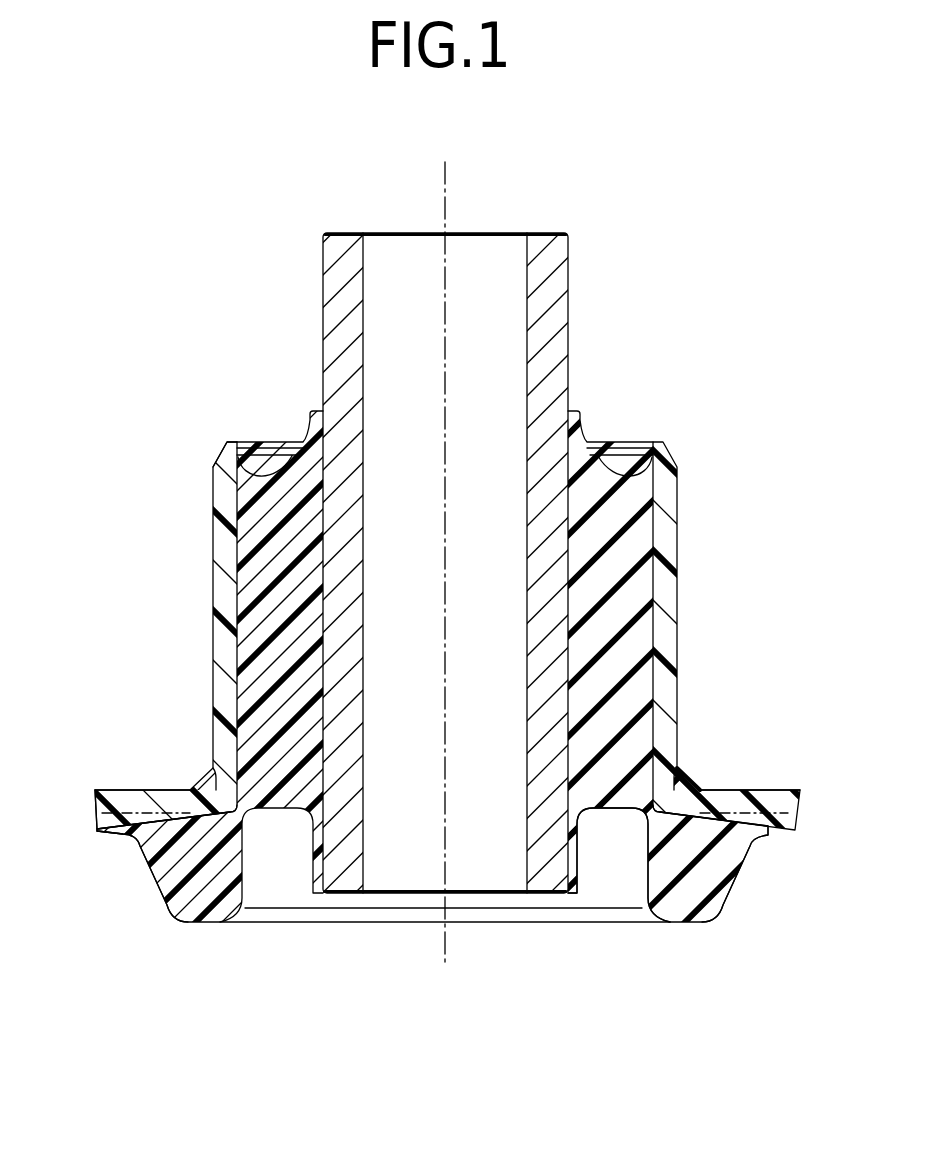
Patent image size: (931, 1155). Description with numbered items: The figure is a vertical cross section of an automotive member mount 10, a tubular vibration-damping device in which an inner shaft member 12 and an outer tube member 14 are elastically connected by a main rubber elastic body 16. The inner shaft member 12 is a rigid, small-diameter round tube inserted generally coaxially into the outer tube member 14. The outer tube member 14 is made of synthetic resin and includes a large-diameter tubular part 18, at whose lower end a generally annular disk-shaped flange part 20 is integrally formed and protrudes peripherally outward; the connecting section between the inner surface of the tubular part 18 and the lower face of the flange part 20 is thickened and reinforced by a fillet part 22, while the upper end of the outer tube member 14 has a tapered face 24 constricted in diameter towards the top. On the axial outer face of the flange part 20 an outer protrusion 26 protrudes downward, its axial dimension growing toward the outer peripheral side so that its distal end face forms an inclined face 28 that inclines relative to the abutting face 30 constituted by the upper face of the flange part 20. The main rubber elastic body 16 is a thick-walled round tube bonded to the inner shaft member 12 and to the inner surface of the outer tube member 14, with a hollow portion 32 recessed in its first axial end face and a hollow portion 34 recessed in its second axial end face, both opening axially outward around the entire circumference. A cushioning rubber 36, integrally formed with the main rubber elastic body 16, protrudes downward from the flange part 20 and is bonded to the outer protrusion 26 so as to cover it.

The member mount 10 is at (681, 349).
The inner shaft member 12 is at (575, 286).
The outer tube member 14 is at (683, 596).
The main rubber elastic body 16 is at (618, 693).
The tubular part 18 is at (222, 599).
The flange part 20 is at (160, 800).
The fillet part 22 is at (203, 782).
The tapered face 24 is at (224, 456).
The outer protrusion 26 is at (107, 829).
The inclined face 28 is at (140, 845).
The abutting face 30 is at (124, 789).
The hollow portion 32 is at (618, 468).
The hollow portion 34 is at (584, 810).
The cushioning rubber 36 is at (708, 870).